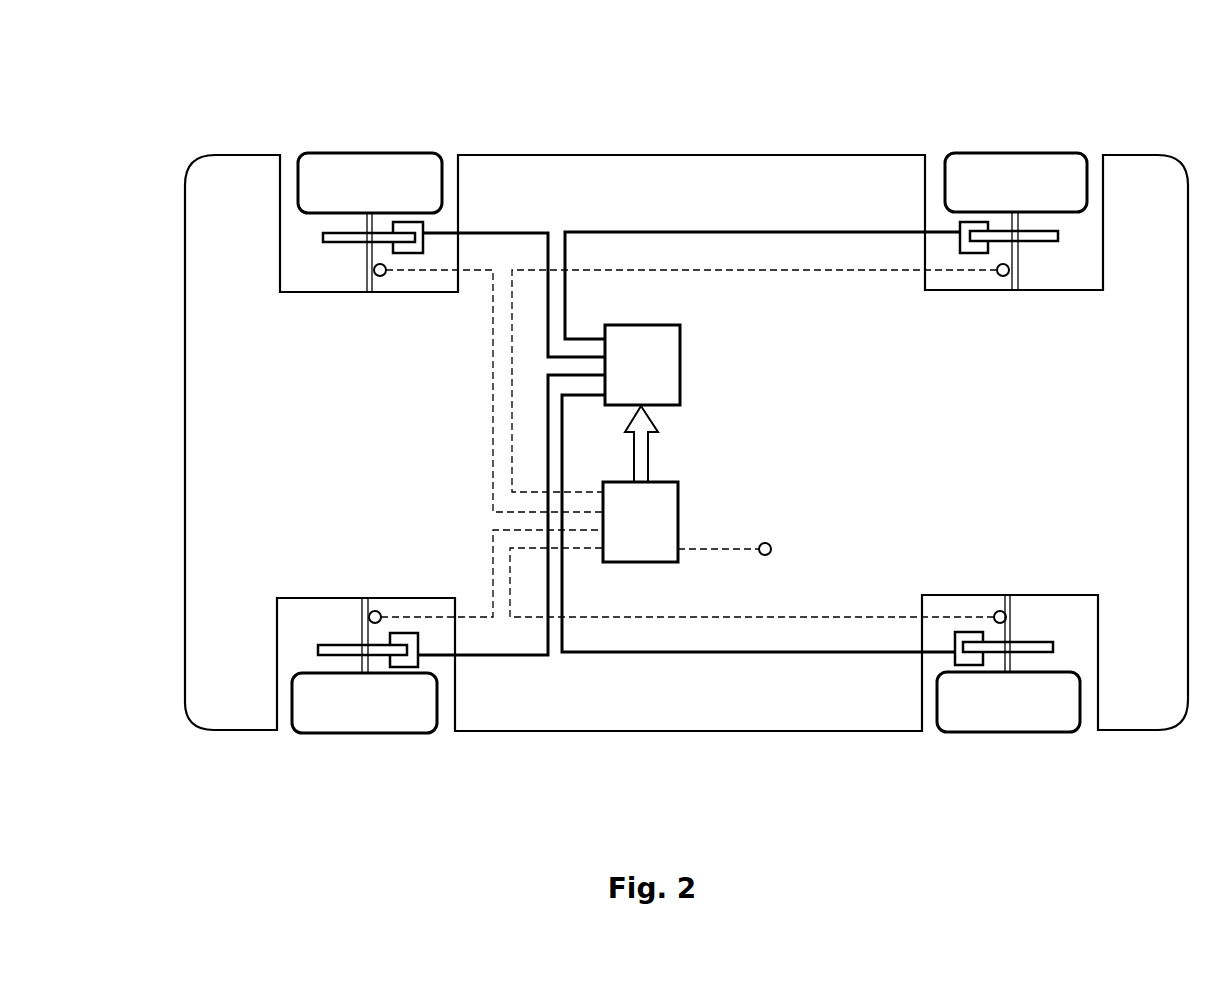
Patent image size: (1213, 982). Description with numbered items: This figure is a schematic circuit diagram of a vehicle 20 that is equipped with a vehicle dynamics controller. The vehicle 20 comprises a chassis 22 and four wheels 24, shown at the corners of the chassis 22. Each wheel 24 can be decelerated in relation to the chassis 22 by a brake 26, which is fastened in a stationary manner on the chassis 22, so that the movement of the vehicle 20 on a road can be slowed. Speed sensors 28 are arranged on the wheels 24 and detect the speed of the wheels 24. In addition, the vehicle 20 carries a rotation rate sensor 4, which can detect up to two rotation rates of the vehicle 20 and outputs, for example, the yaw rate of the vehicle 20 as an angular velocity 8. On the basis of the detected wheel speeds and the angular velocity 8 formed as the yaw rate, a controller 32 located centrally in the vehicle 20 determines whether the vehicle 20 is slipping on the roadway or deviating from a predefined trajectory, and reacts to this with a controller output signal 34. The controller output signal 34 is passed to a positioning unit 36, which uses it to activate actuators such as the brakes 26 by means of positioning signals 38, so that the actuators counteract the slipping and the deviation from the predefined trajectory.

The vehicle 20 is at (128, 76).
The chassis 22 is at (680, 153).
The wheels 24 is at (345, 152).
The brake 26 is at (340, 245).
The speed sensors 28 is at (382, 278).
The controller 32 is at (678, 500).
The controller output signal 34 is at (648, 450).
The positioning unit 36 is at (680, 352).
The positioning signals 38 is at (473, 272).
The rotation rate sensor 4 is at (772, 549).
The angular velocity 8 is at (725, 552).